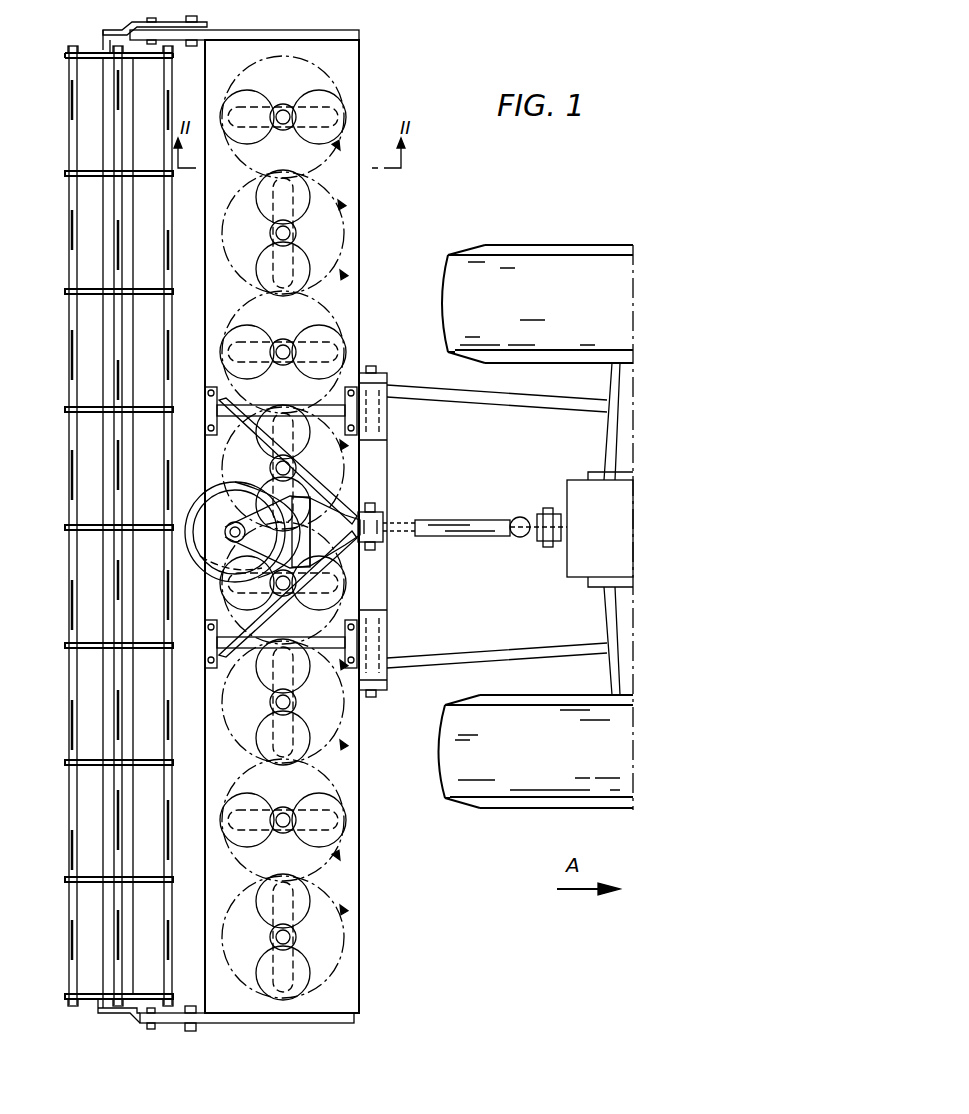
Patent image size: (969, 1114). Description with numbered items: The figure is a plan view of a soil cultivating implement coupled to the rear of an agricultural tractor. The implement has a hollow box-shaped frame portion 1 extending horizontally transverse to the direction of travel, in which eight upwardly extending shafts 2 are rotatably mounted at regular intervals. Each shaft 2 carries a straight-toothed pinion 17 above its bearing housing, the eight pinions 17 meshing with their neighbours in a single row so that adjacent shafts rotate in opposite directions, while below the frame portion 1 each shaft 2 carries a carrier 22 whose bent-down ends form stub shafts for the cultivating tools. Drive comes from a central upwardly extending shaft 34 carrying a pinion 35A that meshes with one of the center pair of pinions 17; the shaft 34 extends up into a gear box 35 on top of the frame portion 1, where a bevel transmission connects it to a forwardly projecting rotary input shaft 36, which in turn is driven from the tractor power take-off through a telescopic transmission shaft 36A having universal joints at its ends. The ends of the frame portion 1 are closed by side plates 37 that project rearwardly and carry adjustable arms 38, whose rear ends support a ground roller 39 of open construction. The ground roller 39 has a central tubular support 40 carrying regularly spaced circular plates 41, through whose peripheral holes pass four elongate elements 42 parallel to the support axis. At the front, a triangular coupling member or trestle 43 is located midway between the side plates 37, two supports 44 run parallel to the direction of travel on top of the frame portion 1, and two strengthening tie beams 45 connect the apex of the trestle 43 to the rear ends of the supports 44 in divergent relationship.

The frame portion 1 is at (350, 272).
The shaft 2 is at (297, 233).
The pinion 17 is at (253, 300).
The carrier 22 is at (303, 176).
The shaft 34 is at (212, 520).
The gear box 35 is at (212, 540).
The pinion 35A is at (228, 568).
The rotary input shaft 36 is at (358, 506).
The telescopic transmission shaft 36A is at (422, 538).
The side plate 37 is at (278, 33).
The arm 38 is at (130, 30).
The ground roller 39 is at (66, 260).
The central tubular support 40 is at (102, 338).
The circular plate 41 is at (66, 408).
The elongate element 42 is at (66, 704).
The coupling member or trestle 43 is at (386, 604).
The support 44 is at (212, 387).
The strengthening tie beam 45 is at (222, 428).